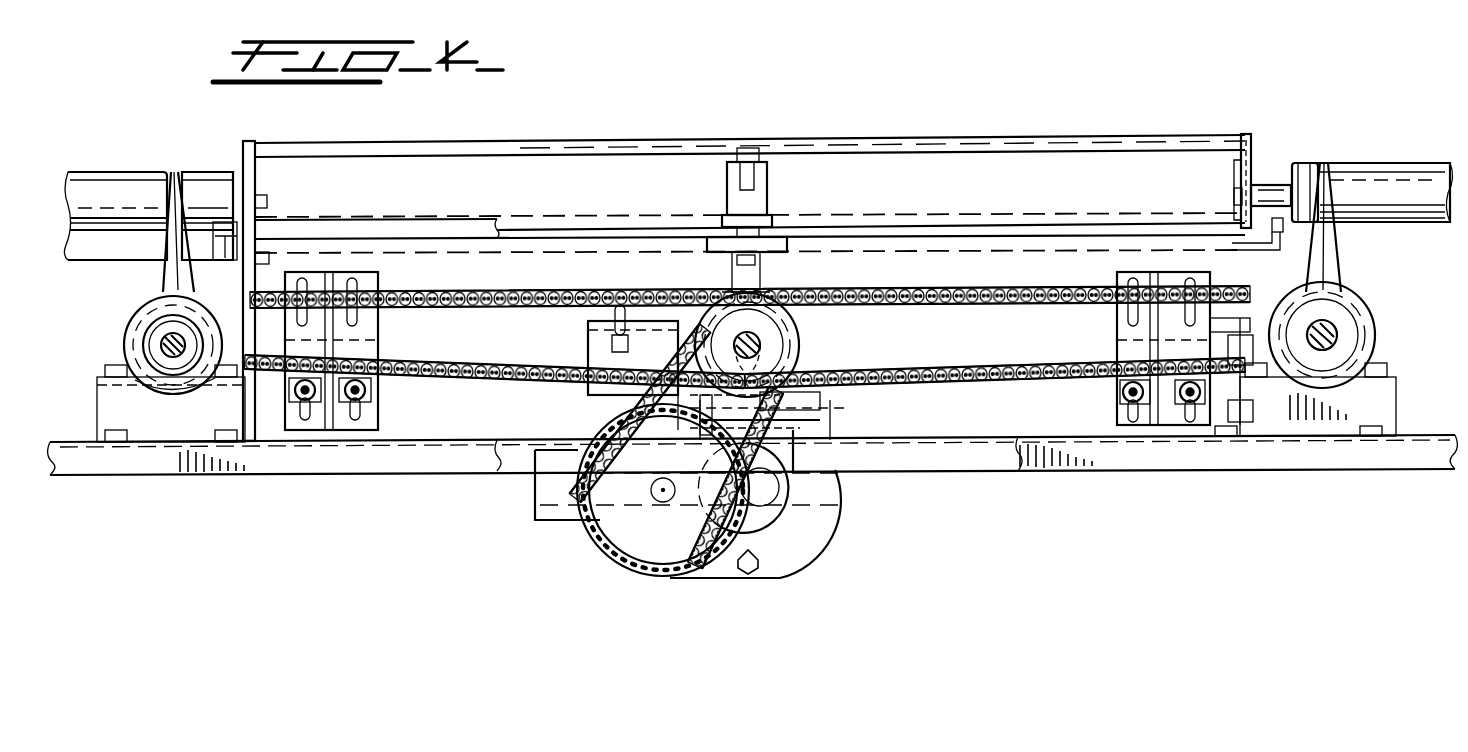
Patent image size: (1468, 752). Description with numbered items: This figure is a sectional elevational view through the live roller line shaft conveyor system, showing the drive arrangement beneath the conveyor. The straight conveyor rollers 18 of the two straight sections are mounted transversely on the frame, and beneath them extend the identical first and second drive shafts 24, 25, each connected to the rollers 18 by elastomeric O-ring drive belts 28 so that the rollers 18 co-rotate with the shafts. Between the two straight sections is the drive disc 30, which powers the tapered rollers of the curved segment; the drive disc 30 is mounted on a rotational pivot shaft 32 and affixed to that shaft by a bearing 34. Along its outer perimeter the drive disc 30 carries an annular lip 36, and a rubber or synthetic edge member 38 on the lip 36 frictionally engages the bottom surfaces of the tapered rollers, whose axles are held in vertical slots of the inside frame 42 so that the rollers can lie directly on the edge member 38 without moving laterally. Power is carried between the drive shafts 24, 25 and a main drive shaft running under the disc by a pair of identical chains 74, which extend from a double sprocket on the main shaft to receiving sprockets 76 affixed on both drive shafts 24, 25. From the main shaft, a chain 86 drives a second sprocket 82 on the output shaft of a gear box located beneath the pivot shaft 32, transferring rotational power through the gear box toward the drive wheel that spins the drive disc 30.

The conveyor rollers 18 is at (116, 188).
The first drive shaft 24 is at (1334, 332).
The second drive shaft 25 is at (172, 400).
The O-ring drive belts 28 is at (1336, 262).
The drive disc 30 is at (998, 248).
The rotational pivot shaft 32 is at (760, 192).
The bearing 34 is at (780, 236).
The annular lip 36 is at (1283, 238).
The edge member 38 is at (1274, 186).
The inside frame 42 is at (1234, 170).
The chains 74 is at (462, 376).
The receiving sprockets 76 is at (133, 322).
The second sprocket 82 is at (645, 535).
The chain 86 is at (820, 414).